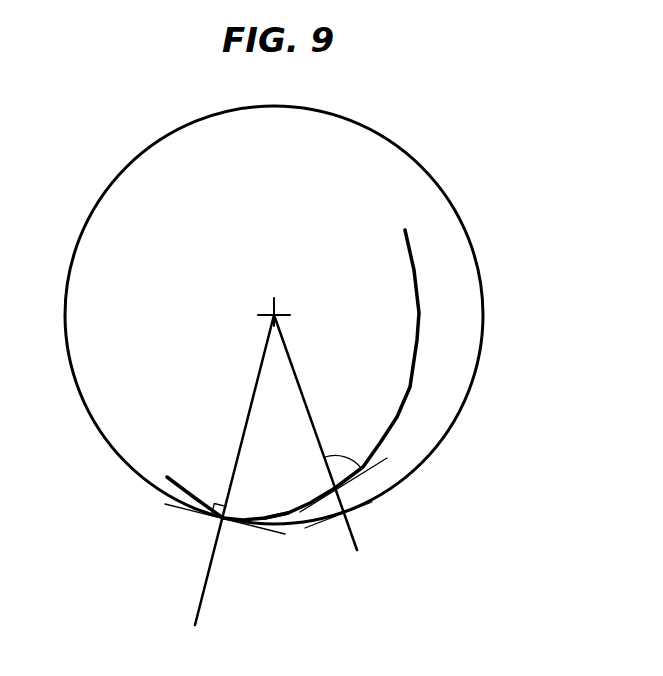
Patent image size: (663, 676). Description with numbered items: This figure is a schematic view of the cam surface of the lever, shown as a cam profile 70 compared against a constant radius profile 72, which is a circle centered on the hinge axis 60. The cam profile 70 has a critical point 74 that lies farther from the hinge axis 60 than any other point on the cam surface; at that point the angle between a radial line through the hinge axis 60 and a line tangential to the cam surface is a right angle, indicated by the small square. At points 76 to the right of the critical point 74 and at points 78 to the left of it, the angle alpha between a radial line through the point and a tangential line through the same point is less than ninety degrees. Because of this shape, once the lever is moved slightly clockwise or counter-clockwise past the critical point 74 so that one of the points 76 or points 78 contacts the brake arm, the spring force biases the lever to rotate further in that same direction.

The hinge axis 60 is at (270, 310).
The cam profile 70 is at (419, 300).
The constant radius profile 72 is at (442, 425).
The critical point 74 is at (226, 522).
The points to the right of the critical point 76 is at (332, 487).
The points to the left of the critical point 78 is at (168, 486).